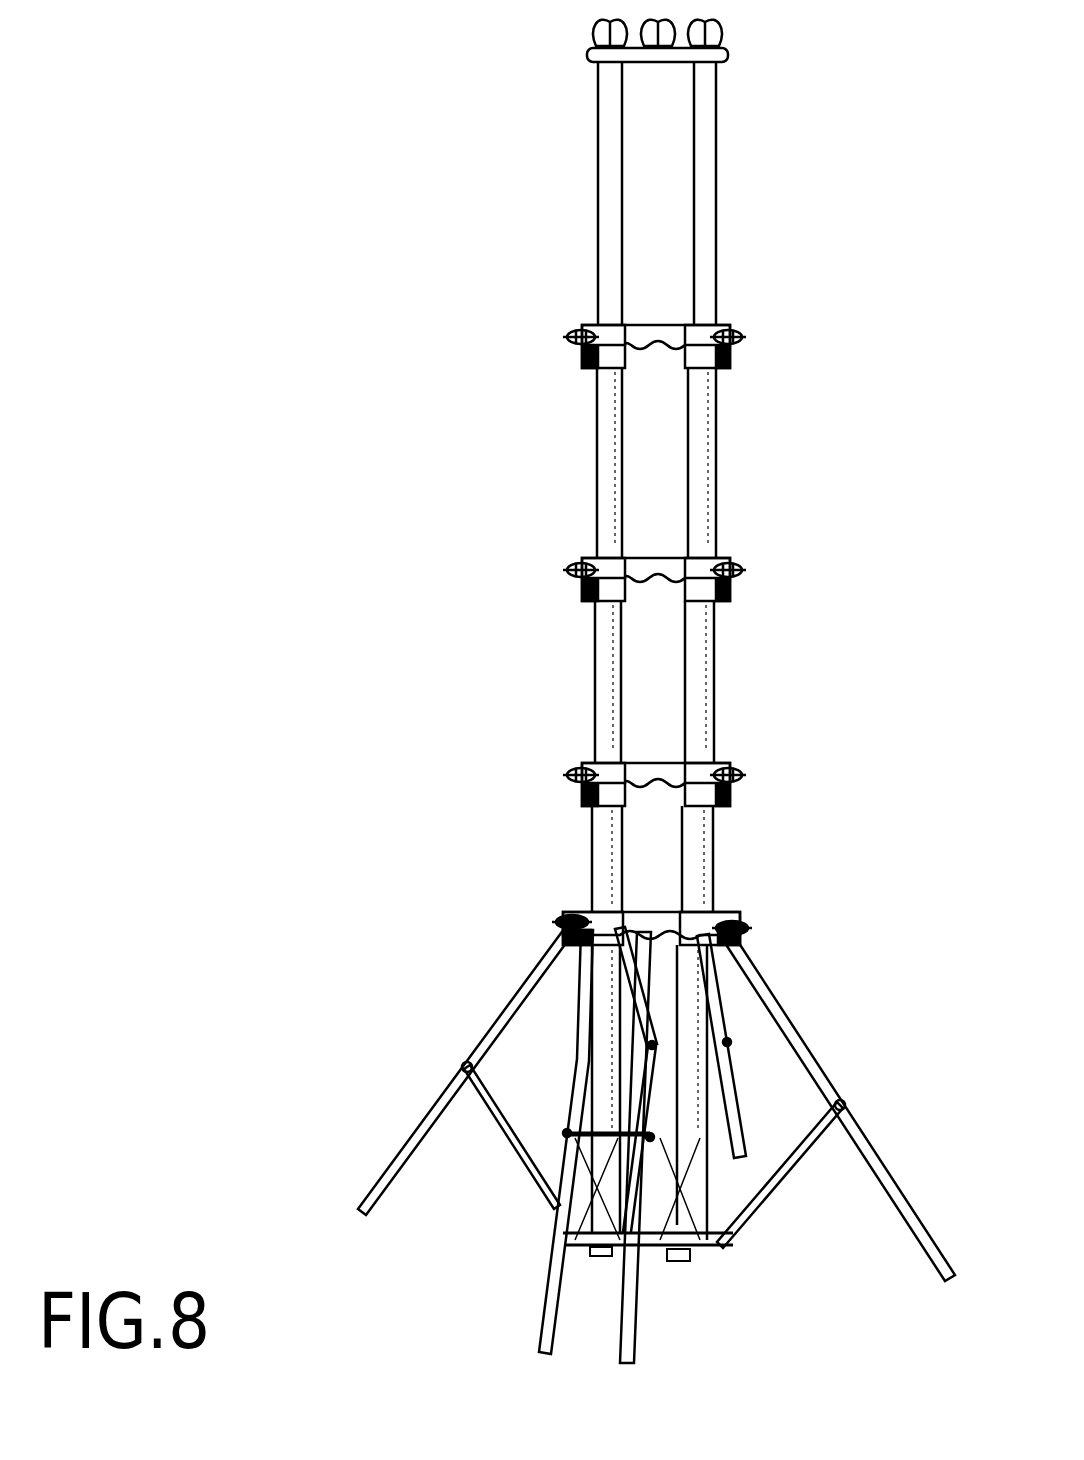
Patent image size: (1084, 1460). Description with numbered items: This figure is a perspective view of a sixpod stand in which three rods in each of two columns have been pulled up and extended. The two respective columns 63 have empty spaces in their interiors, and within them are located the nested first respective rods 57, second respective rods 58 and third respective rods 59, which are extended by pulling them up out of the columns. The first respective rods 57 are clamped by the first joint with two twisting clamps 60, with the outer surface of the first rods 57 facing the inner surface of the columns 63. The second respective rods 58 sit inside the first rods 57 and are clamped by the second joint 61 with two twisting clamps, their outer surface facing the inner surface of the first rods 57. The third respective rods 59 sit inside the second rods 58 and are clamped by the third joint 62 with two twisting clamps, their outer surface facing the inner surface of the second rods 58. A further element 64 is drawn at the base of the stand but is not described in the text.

The first respective rods 57 is at (603, 722).
The second respective rods 58 is at (612, 472).
The third respective rods 59 is at (608, 182).
The first joint with two twisting clamps 60 is at (645, 780).
The second joint 61 is at (655, 578).
The third joint 62 is at (657, 330).
The two respective columns 63 is at (607, 1080).
The leg brace 64 is at (697, 1130).